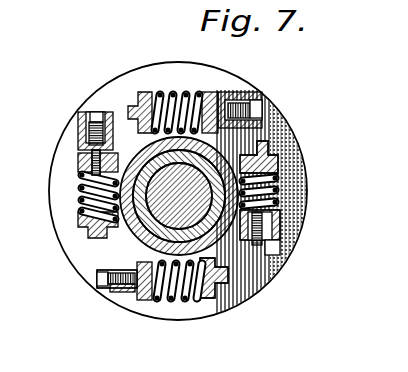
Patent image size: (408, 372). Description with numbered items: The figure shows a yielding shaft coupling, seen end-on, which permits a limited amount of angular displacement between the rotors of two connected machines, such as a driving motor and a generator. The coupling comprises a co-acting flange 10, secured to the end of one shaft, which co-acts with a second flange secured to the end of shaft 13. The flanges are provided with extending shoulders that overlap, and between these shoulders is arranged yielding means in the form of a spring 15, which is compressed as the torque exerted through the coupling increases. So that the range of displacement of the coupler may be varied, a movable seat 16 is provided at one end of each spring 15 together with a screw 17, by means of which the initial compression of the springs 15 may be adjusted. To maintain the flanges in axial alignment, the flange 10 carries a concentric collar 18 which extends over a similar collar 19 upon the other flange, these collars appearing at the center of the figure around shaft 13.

The flange 10 is at (75, 257).
The shaft 13 is at (153, 203).
The spring 15 is at (201, 93).
The movable seat 16 is at (80, 187).
The screw 17 is at (80, 152).
The concentric collar 18 is at (138, 168).
The collar 19 is at (143, 210).